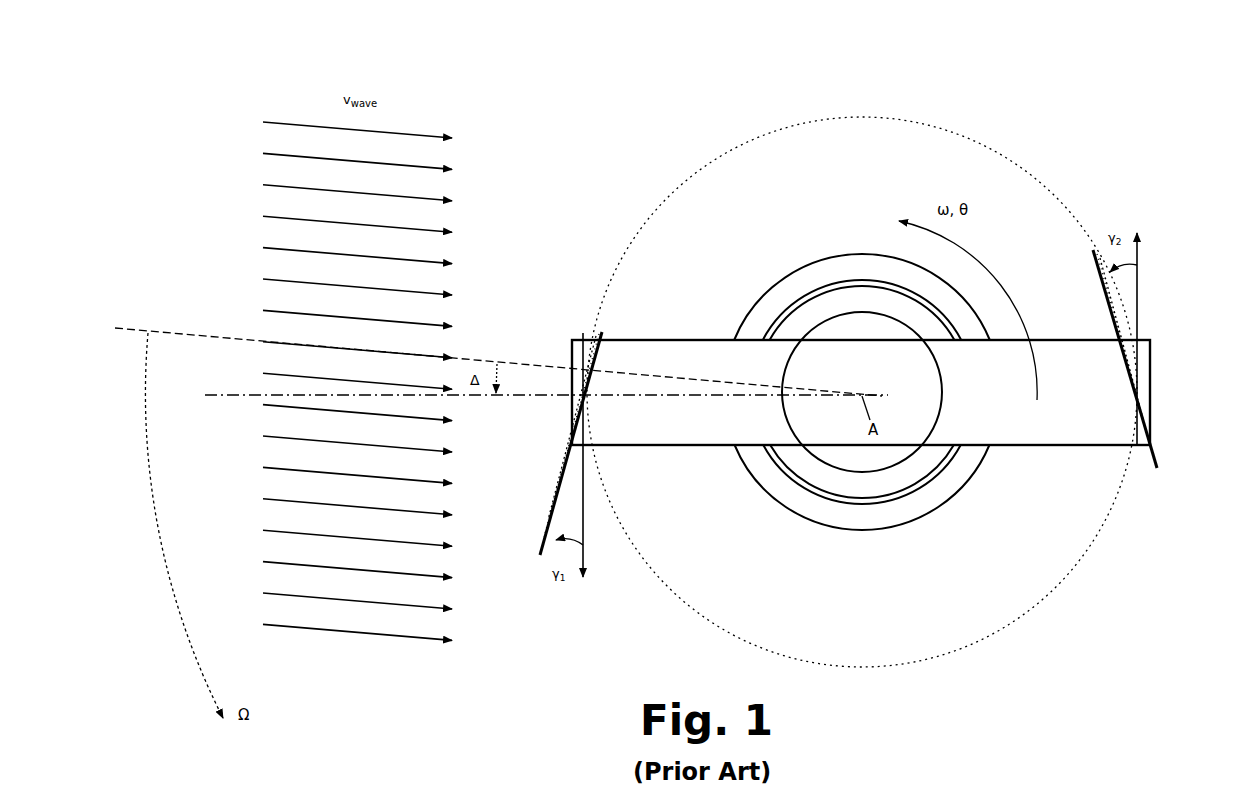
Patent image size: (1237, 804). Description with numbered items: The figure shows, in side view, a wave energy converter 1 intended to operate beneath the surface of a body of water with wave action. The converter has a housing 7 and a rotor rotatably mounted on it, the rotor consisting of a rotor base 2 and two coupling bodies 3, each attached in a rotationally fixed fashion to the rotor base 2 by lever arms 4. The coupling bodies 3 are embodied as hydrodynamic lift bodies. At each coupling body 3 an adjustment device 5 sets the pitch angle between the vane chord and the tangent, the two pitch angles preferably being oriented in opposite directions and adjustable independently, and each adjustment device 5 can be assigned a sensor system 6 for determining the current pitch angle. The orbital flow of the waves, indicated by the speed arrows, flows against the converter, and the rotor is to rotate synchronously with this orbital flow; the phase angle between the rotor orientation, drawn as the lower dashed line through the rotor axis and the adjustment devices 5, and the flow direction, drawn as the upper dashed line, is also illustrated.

The wave energy converter 1 is at (1098, 85).
The rotor base 2 is at (797, 318).
The coupling body 3 is at (578, 372).
The lever arm 4 is at (861, 392).
The adjustment device 5 is at (575, 400).
The sensor system 6 is at (848, 395).
The housing 7 is at (830, 262).